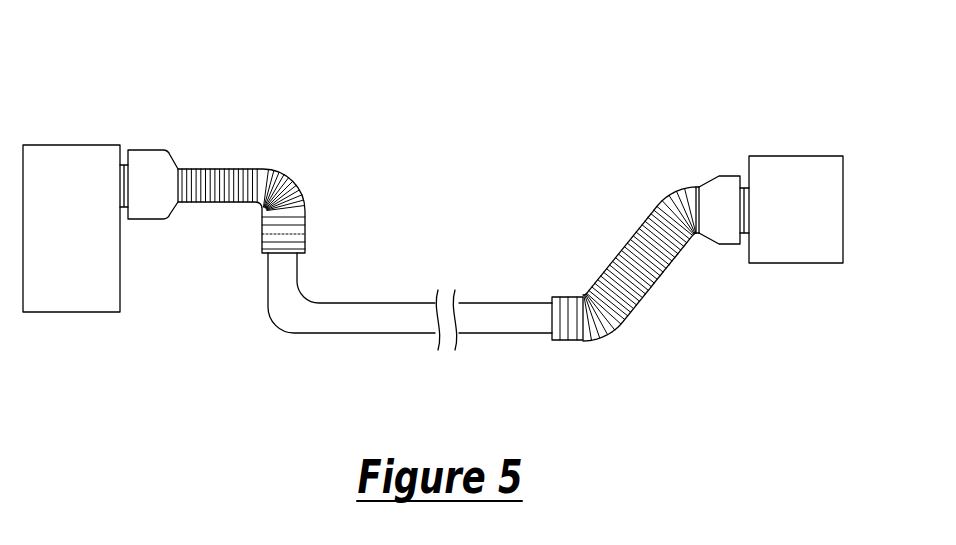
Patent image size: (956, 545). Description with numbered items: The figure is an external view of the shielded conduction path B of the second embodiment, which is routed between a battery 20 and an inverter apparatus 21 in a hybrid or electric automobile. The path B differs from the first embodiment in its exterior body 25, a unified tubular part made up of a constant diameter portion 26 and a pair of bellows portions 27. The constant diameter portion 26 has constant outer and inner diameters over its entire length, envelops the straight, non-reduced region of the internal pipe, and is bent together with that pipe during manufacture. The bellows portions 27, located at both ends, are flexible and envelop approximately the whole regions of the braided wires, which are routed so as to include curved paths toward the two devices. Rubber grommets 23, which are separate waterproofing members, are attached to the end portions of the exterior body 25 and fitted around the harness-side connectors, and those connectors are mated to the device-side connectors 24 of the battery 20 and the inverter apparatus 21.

The battery 20 is at (799, 178).
The inverter apparatus 21 is at (59, 172).
The grommet 23 is at (155, 187).
The device-side connector 24 is at (124, 173).
The exterior body 25 is at (478, 272).
The constant diameter portion 26 is at (395, 317).
The bellows portion 27 is at (287, 193).
The shielded conduction path B is at (600, 163).